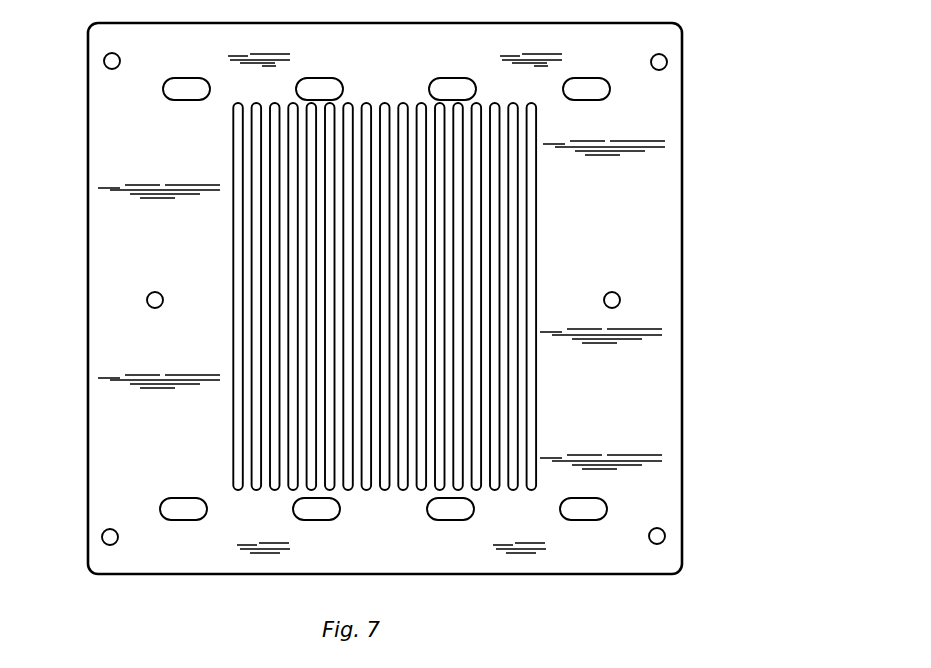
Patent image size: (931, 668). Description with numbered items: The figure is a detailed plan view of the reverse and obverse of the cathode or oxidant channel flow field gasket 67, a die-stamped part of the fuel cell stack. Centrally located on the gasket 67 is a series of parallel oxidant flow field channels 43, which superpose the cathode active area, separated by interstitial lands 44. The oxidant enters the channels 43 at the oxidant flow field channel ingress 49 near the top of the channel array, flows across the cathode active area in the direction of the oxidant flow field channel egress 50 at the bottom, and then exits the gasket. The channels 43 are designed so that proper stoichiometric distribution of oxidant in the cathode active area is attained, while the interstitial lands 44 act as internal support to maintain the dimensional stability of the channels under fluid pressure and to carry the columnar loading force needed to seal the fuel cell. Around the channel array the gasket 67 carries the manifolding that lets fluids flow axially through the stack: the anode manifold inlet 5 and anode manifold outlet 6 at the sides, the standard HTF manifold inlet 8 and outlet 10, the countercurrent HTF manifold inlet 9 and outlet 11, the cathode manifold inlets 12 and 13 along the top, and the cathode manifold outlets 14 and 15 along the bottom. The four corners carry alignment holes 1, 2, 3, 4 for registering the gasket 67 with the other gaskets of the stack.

The alignment hole 1 is at (104, 60).
The alignment hole 2 is at (667, 62).
The alignment hole 3 is at (665, 533).
The alignment hole 4 is at (102, 535).
The anode manifold inlet 5 is at (147, 300).
The anode manifold outlet 6 is at (620, 297).
The standard HTF manifold inlet 8 is at (176, 85).
The countercurrent HTF manifold inlet 9 is at (577, 85).
The standard HTF manifold outlet 10 is at (587, 506).
The countercurrent HTF manifold outlet 11 is at (184, 506).
The cathode manifold inlet 12 is at (309, 85).
The cathode manifold inlet 13 is at (443, 85).
The cathode manifold outlet 14 is at (452, 506).
The cathode manifold outlet 15 is at (318, 506).
The oxidant flow field channels 43 is at (400, 491).
The interstitial lands 44 is at (412, 112).
The oxidant flow field channel ingress 49 is at (228, 107).
The oxidant flow field channel egress 50 is at (232, 488).
The cathode channel flow field gasket 67 is at (742, 220).